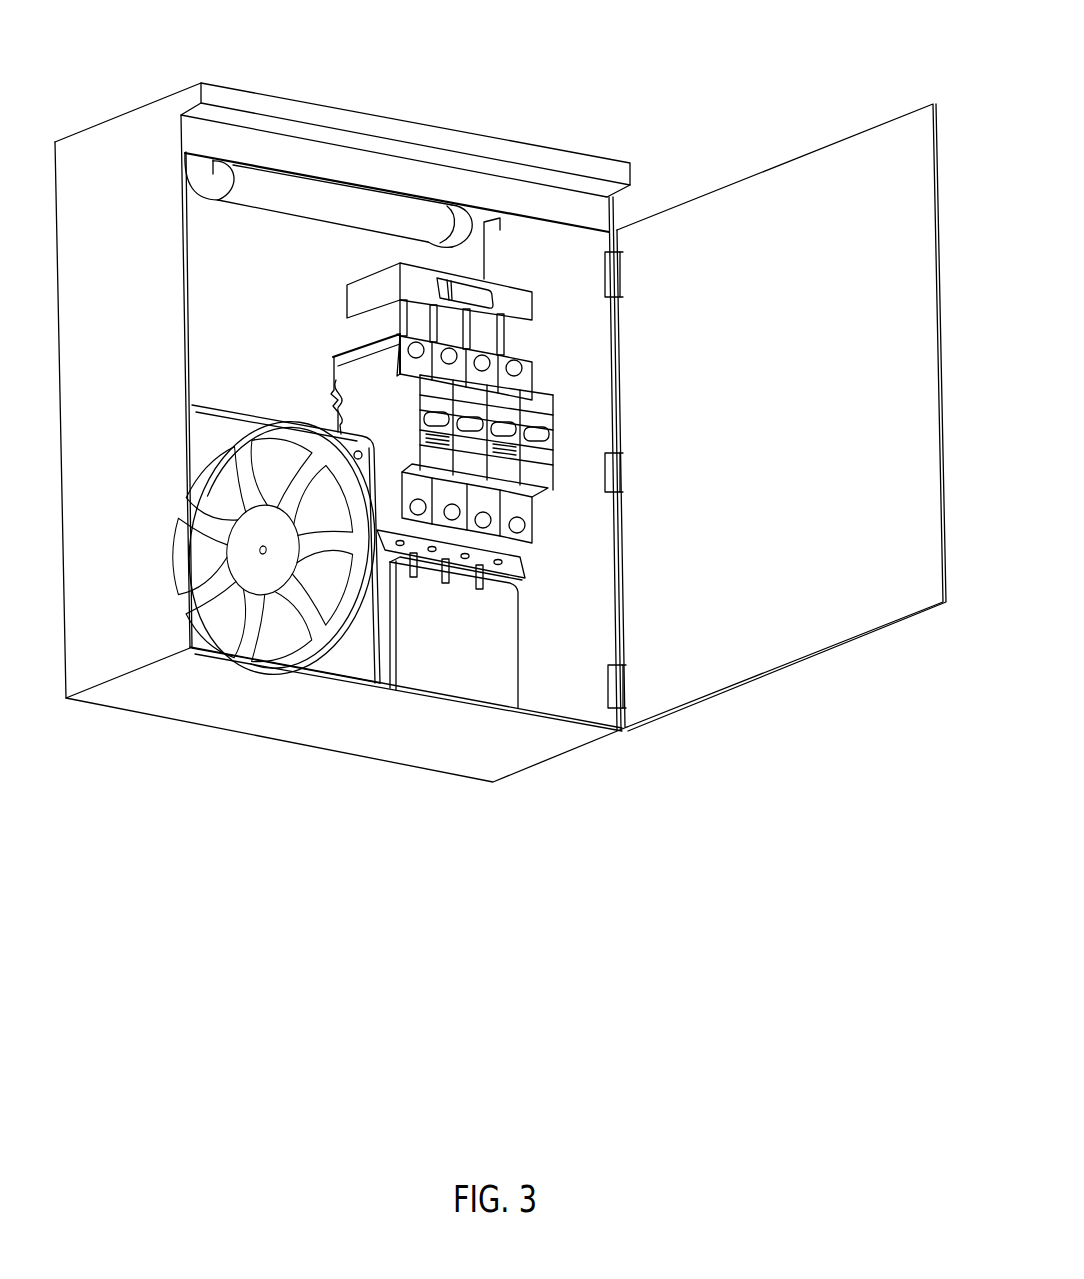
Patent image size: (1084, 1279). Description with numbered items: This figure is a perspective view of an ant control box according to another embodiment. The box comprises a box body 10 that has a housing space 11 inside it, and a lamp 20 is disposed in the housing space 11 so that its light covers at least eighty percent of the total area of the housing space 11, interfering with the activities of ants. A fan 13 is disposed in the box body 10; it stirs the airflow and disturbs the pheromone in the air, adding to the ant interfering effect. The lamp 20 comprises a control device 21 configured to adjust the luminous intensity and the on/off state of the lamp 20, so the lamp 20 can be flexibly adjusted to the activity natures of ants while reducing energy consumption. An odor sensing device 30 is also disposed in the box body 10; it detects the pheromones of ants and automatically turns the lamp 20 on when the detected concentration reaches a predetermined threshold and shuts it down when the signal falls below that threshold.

The box body 10 is at (253, 100).
The housing space 11 is at (567, 657).
The fan 13 is at (263, 577).
The lamp 20 is at (305, 197).
The control device 21 is at (512, 302).
The odor sensing device 30 is at (422, 677).